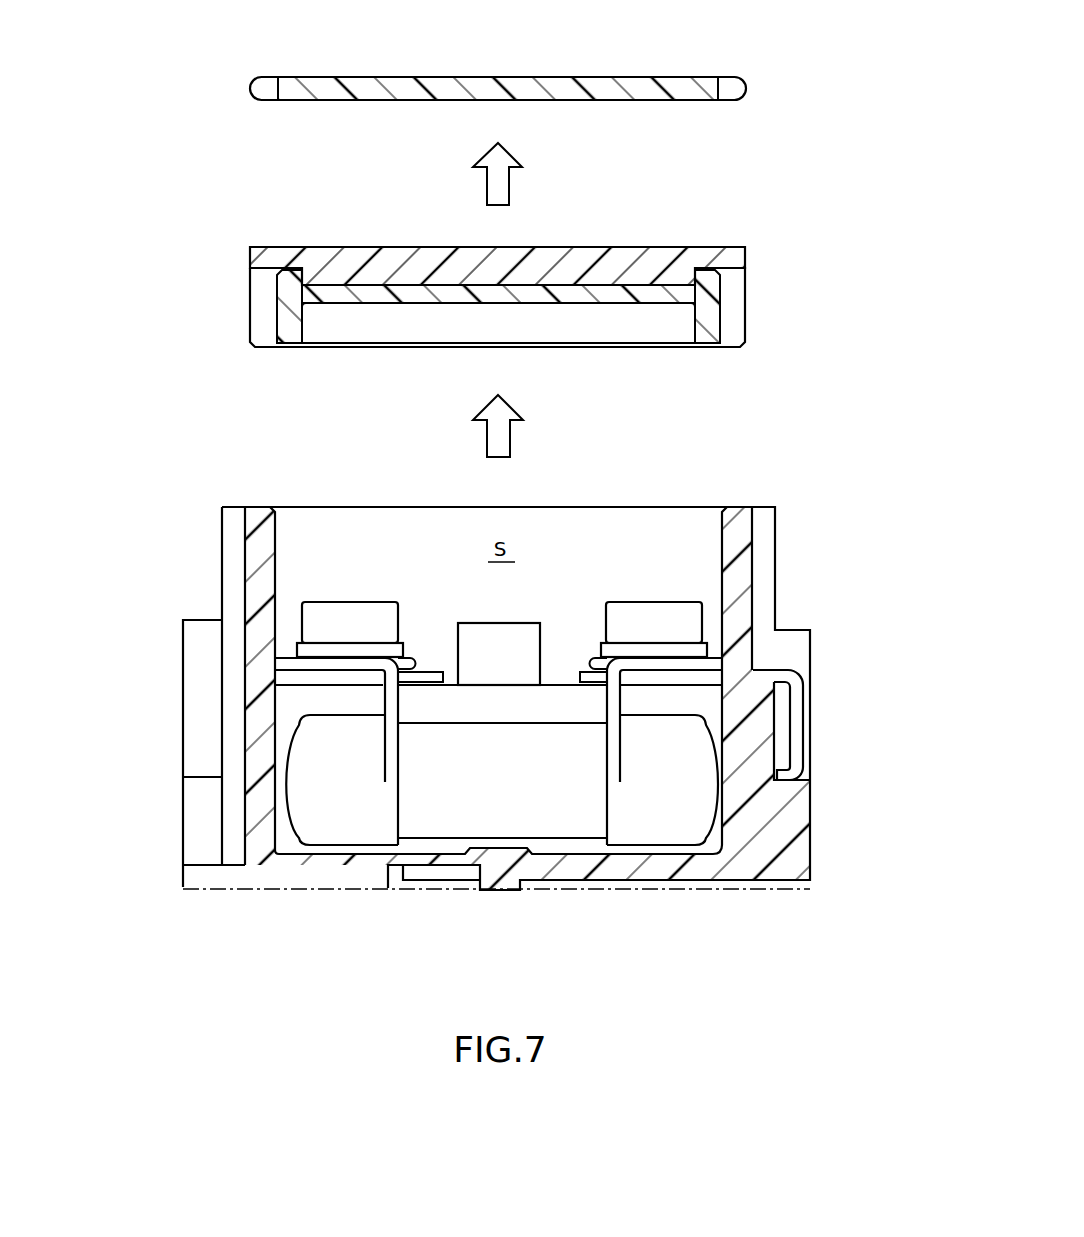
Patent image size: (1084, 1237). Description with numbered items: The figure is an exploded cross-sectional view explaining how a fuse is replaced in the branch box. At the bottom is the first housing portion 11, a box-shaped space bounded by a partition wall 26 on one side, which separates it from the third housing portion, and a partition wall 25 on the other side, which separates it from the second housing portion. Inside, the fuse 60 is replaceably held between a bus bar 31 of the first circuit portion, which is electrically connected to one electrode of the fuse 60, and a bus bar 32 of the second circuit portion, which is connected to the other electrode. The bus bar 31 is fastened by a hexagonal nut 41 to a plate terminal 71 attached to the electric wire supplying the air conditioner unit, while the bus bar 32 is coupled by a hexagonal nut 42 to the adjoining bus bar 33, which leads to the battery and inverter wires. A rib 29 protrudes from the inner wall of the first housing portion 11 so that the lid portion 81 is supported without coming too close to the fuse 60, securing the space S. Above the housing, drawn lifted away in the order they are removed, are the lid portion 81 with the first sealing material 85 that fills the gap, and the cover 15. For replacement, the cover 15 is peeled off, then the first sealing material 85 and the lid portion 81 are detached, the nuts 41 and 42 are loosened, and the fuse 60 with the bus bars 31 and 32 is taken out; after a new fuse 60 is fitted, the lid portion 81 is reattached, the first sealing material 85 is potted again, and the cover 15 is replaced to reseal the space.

The first housing portion 11 is at (480, 659).
The cover 15 is at (662, 77).
The partition wall 25 is at (735, 507).
The partition wall 26 is at (252, 533).
The rib 29 is at (532, 623).
The bus bar 31 is at (327, 665).
The bus bar 32 is at (683, 665).
The bus bar 33 is at (805, 736).
The hexagonal nut 41 is at (351, 602).
The hexagonal nut 42 is at (655, 602).
The fuse 60 is at (508, 820).
The plate terminal 71 is at (310, 680).
The lid portion 81 is at (735, 308).
The first sealing material 85 is at (662, 247).